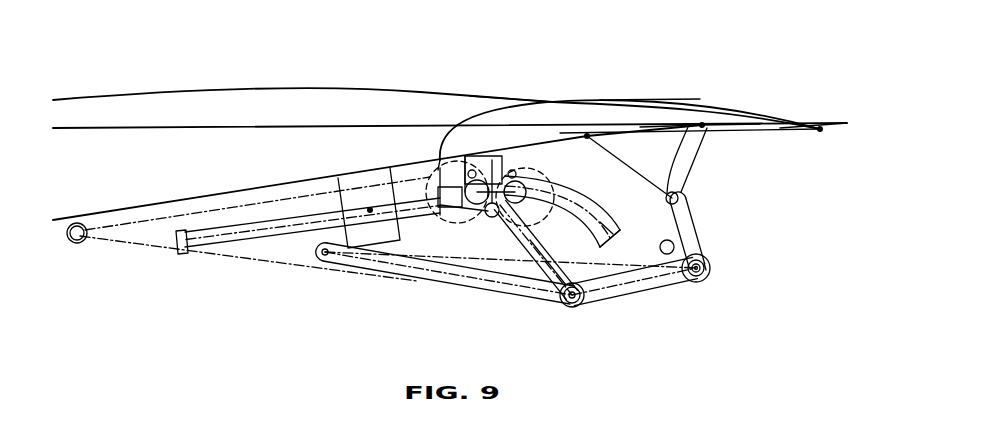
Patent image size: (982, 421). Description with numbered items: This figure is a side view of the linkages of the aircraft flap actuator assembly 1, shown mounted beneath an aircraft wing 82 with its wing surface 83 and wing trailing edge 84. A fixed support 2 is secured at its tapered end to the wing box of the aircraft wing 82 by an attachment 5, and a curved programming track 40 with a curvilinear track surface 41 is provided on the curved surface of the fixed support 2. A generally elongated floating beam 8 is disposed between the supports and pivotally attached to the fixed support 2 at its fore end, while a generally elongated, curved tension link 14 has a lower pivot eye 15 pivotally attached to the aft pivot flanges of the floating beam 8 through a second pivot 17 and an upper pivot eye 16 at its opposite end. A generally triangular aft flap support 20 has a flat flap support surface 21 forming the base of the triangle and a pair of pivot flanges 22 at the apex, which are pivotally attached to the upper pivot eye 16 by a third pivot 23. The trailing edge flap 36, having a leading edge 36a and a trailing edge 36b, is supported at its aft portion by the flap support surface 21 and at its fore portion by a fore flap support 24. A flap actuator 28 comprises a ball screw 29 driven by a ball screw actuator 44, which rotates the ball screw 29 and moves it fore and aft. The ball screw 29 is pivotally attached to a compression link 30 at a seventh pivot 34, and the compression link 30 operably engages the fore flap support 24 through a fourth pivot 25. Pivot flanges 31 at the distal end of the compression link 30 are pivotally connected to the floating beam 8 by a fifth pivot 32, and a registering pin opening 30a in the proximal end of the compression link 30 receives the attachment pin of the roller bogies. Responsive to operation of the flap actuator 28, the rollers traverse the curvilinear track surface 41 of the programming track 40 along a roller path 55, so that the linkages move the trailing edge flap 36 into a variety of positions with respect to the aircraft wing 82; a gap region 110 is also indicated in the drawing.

The aircraft flap actuator assembly 1 is at (396, 300).
The fixed support 2 is at (246, 272).
The attachment 5 is at (78, 243).
The floating beam 8 is at (640, 310).
The tension link 14 is at (709, 229).
The lower pivot eye 15 is at (710, 270).
The upper pivot eye 16 is at (680, 198).
The second pivot 17 is at (697, 284).
The aft flap support 20 is at (725, 197).
The flap support surface 21 is at (663, 126).
The pivot flanges 22 is at (680, 215).
The third pivot 23 is at (690, 135).
The fore flap support 24 is at (520, 168).
The fourth pivot 25 is at (435, 165).
The flap actuator 28 is at (308, 227).
The ball screw 29 is at (286, 230).
The compression link 30 is at (512, 254).
The registering pin opening 30a is at (476, 224).
The pivot flanges 31 is at (545, 300).
The fifth pivot 32 is at (572, 307).
The seventh pivot 34 is at (435, 232).
The trailing edge flap 36 is at (548, 100).
The leading edge 36a is at (440, 158).
The trailing edge 36b is at (820, 132).
The programming track 40 is at (587, 252).
The curvilinear track surface 41 is at (573, 192).
The ball screw actuator 44 is at (372, 240).
The roller path 55 is at (600, 222).
The aircraft wing 82 is at (279, 88).
The wing surface 83 is at (493, 93).
The wing trailing edge 84 is at (648, 108).
The gap / seal 110 is at (500, 170).